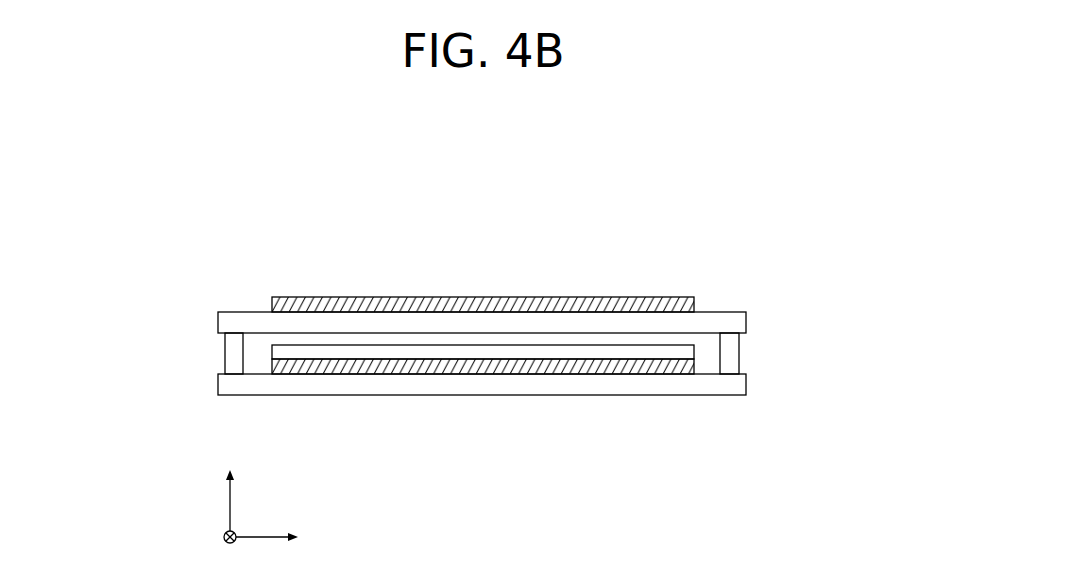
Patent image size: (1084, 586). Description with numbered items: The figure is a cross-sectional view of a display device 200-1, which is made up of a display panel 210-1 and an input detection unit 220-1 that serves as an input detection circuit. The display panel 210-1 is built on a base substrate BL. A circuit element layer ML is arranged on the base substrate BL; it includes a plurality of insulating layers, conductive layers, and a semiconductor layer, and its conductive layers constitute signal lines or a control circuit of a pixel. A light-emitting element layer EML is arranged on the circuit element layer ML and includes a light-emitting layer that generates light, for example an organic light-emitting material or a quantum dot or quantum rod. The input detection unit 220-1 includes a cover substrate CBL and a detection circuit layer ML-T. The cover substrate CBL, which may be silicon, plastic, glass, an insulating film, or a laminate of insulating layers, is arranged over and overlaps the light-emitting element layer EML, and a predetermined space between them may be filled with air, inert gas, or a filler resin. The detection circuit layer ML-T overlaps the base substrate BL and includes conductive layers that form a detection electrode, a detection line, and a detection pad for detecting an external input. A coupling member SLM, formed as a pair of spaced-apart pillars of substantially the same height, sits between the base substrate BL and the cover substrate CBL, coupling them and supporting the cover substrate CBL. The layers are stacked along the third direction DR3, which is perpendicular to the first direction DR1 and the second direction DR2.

The display device 200-1 is at (537, 286).
The input detection unit 220-1 is at (577, 301).
The display panel 210-1 is at (570, 377).
The detection circuit layer ML-T is at (683, 297).
The cover substrate CBL is at (737, 321).
The coupling member SLM is at (232, 352).
The light-emitting element layer EML is at (692, 350).
The circuit element layer ML is at (695, 364).
The base substrate BL is at (737, 384).
The first direction DR1 is at (292, 537).
The second direction DR2 is at (233, 551).
The third direction DR3 is at (233, 488).